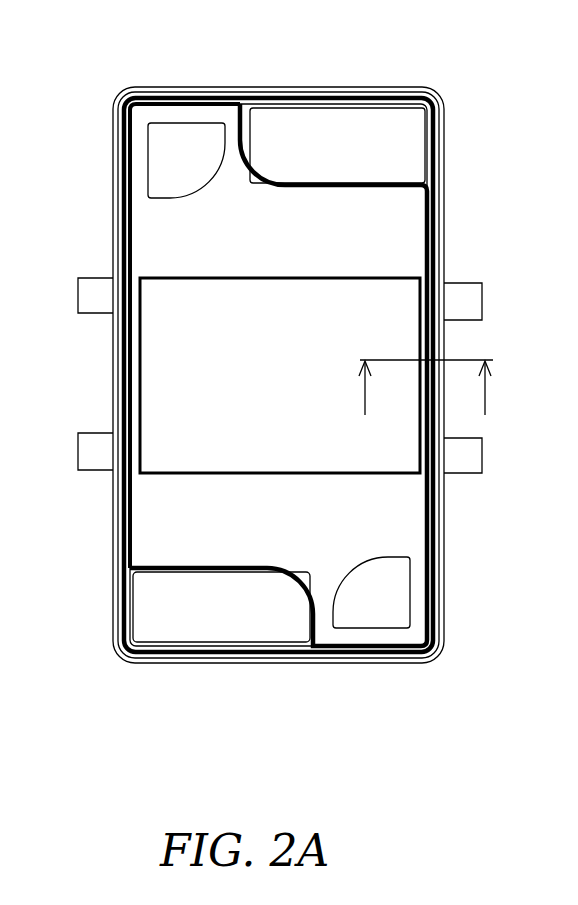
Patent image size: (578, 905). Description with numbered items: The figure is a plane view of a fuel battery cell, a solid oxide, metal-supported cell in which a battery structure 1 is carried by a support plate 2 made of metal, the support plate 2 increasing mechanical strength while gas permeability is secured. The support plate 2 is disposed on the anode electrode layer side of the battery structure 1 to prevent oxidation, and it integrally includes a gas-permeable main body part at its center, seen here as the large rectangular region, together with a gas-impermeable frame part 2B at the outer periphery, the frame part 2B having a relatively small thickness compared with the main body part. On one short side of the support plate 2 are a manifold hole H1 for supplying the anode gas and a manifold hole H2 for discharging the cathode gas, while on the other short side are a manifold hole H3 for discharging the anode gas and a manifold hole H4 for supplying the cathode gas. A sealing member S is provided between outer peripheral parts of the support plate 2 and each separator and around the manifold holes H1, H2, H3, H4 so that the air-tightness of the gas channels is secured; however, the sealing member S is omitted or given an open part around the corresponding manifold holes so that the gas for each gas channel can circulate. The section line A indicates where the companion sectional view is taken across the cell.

The battery structure 1 is at (234, 353).
The support plate 2 is at (262, 375).
The frame part 2B is at (326, 415).
The manifold hole H1 is at (148, 111).
The manifold hole H2 is at (377, 115).
The manifold hole H3 is at (409, 639).
The manifold hole H4 is at (198, 644).
The sealing member S is at (306, 386).
The line A- A is at (424, 378).